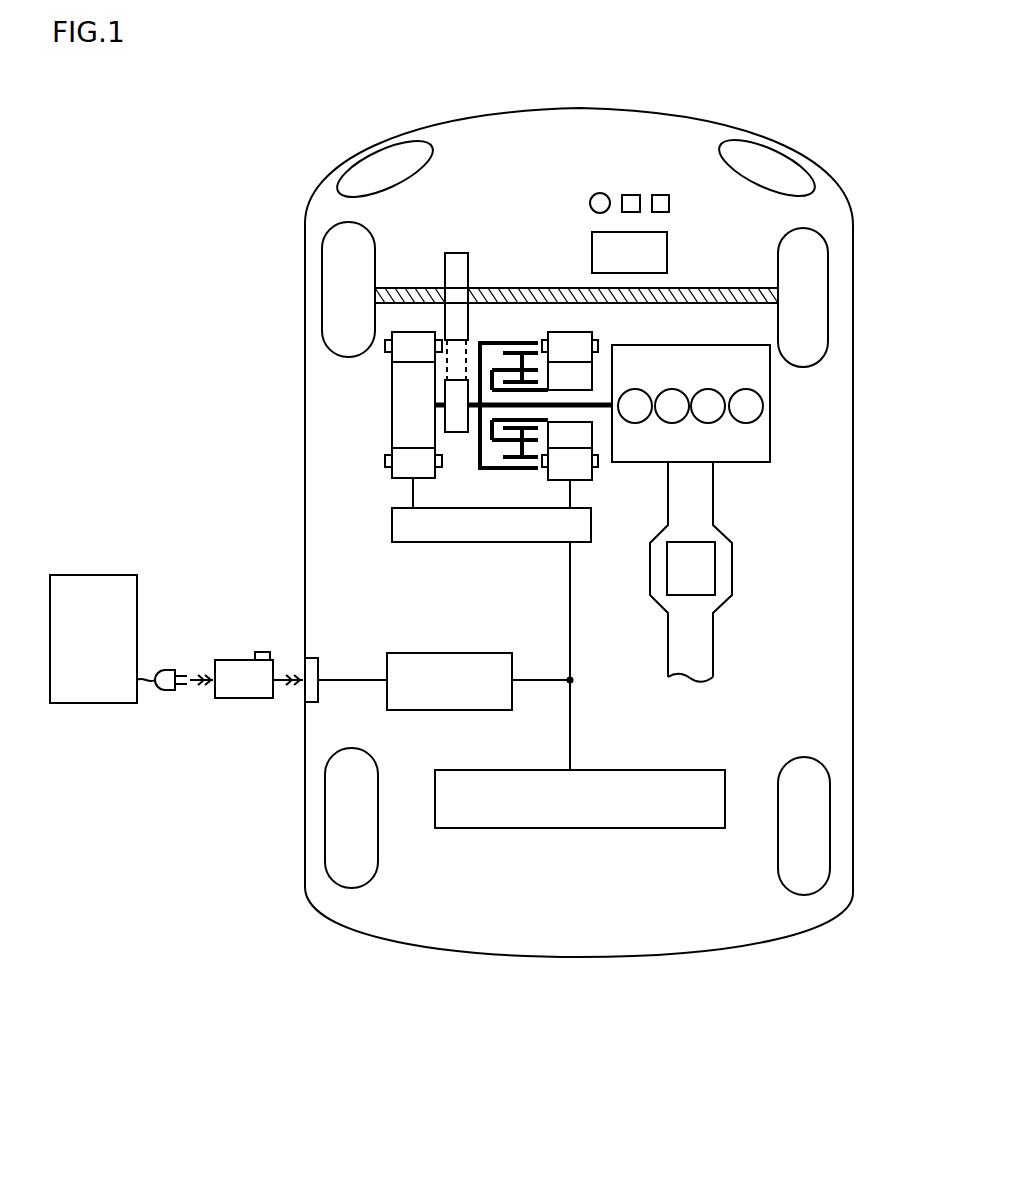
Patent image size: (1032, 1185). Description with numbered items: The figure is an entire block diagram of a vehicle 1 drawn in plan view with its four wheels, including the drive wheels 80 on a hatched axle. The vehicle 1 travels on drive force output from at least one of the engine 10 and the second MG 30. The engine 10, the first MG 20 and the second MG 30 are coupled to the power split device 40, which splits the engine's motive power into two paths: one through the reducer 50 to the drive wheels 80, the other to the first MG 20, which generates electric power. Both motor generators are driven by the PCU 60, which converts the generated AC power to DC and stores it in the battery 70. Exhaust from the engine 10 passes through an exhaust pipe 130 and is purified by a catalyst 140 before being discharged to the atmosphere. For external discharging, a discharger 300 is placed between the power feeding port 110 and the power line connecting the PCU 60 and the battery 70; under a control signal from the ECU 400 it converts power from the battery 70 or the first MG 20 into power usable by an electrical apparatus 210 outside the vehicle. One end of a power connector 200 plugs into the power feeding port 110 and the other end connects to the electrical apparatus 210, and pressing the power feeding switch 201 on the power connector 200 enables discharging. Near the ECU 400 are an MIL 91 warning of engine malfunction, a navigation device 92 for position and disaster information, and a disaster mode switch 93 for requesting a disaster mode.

The vehicle 1 is at (353, 70).
The engine 10 is at (770, 452).
The first MG 20 is at (571, 330).
The second MG 30 is at (392, 423).
The power split device 40 is at (513, 342).
The reducer 50 is at (457, 246).
The PCU 60 is at (392, 523).
The battery 70 is at (600, 828).
The drive wheels 80 is at (828, 298).
The MIL 91 is at (600, 193).
The navigation device 92 is at (630, 195).
The disaster mode switch 93 is at (660, 195).
The power feeding port 110 is at (318, 656).
The exhaust pipe 130 is at (713, 496).
The catalyst 140 is at (715, 567).
The power connector 200 is at (233, 660).
The power feeding switch 201 is at (262, 652).
The electrical apparatus 210 is at (92, 575).
The discharger 300 is at (455, 712).
The ECU 400 is at (667, 253).